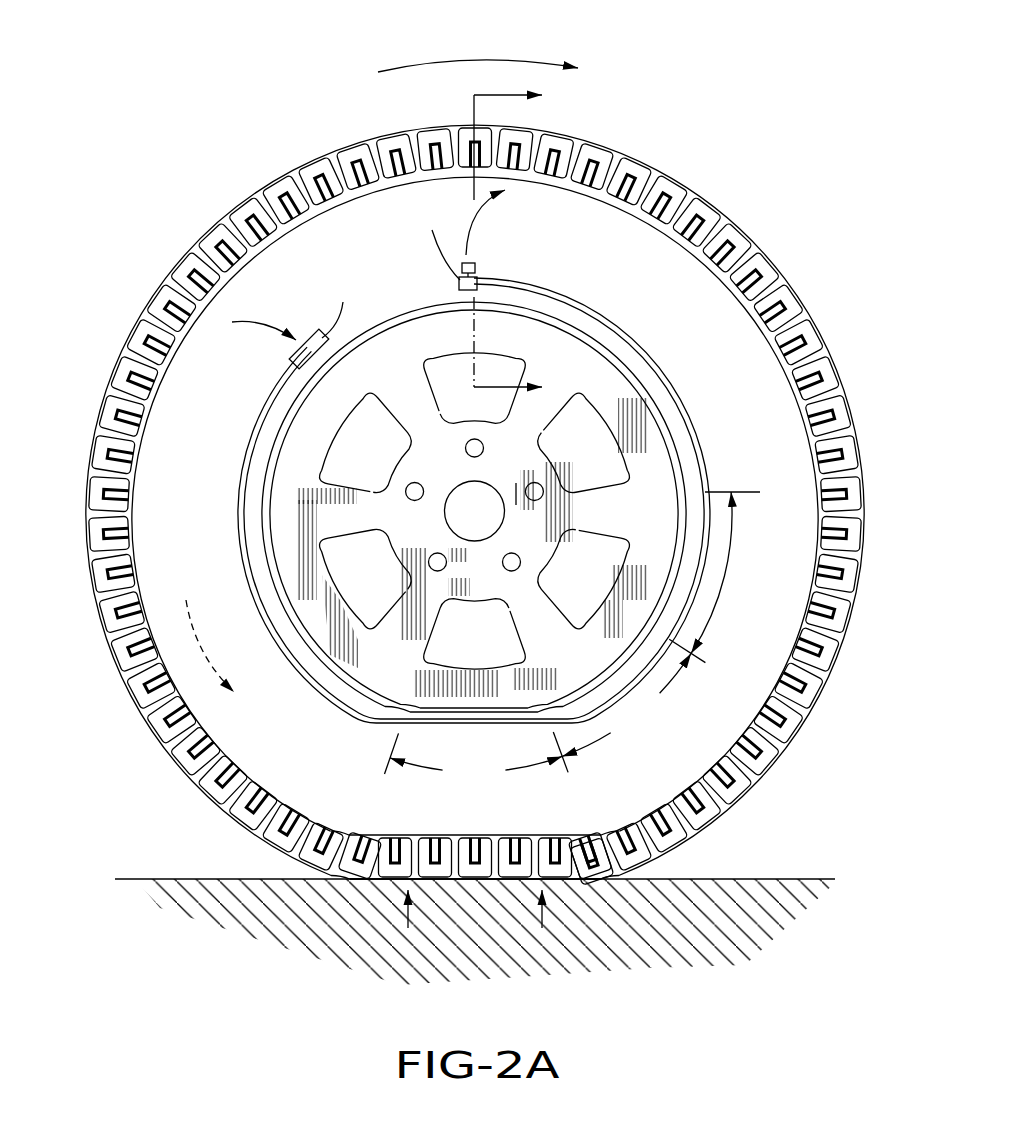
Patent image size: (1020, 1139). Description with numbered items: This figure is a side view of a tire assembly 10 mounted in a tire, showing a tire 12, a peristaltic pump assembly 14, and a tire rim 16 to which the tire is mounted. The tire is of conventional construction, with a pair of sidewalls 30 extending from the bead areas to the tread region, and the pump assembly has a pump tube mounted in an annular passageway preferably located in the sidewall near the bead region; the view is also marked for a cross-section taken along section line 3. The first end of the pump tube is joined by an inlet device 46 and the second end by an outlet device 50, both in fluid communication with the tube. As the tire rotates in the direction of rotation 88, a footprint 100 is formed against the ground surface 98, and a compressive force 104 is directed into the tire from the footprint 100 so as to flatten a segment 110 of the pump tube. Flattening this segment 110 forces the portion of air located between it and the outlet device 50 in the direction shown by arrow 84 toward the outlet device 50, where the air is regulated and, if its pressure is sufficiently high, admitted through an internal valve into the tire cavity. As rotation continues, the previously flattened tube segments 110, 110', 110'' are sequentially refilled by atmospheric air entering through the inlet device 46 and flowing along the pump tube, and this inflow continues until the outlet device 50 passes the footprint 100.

The section line 3- 3 is at (519, 242).
The tire assembly 10 is at (172, 143).
The tire 12 is at (672, 273).
The peristaltic pump assembly 14 is at (712, 458).
The tire rim 16 is at (445, 470).
The sidewalls 30 is at (715, 340).
The inlet device 46 is at (293, 352).
The outlet device 50 is at (478, 278).
The arrow 84 is at (204, 600).
The direction of rotation 88 is at (378, 68).
The ground surface 98 is at (727, 878).
The footprint 100 is at (465, 879).
The compressive force 104 is at (405, 914).
The segment 110 is at (474, 760).
The tube segment 110' is at (622, 712).
The tube segment 110'' is at (714, 577).